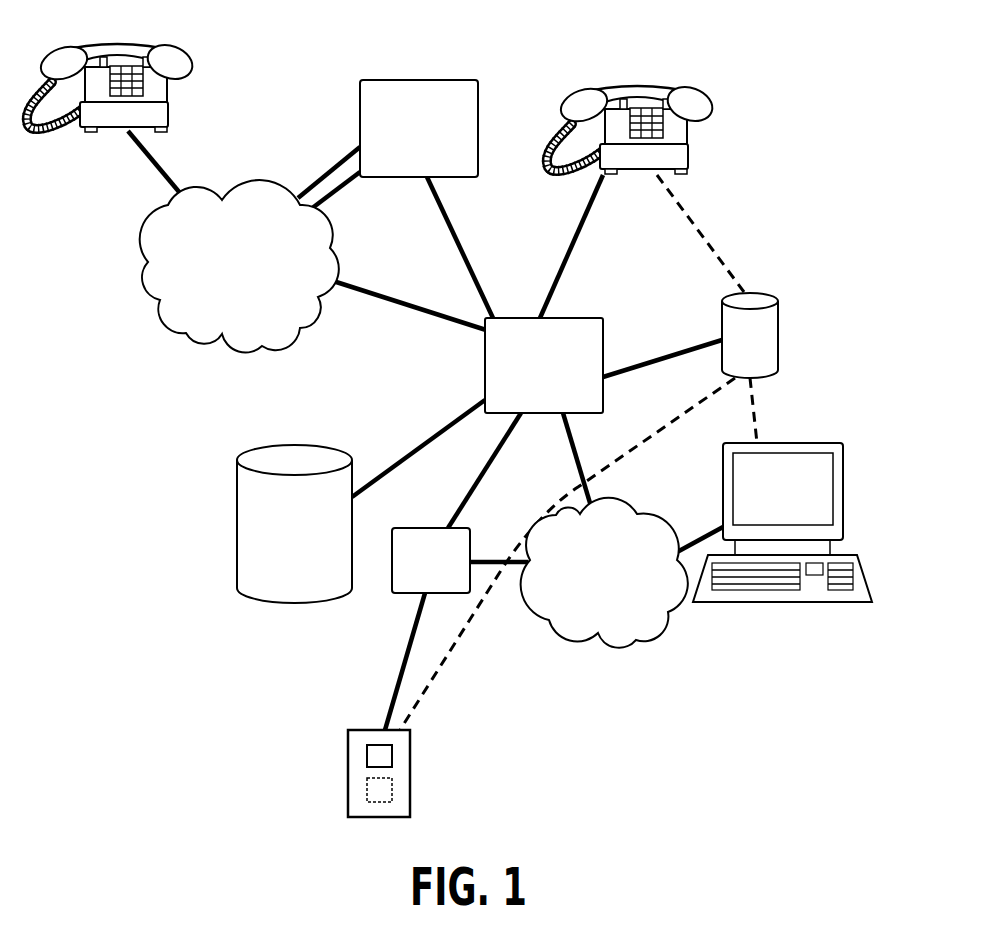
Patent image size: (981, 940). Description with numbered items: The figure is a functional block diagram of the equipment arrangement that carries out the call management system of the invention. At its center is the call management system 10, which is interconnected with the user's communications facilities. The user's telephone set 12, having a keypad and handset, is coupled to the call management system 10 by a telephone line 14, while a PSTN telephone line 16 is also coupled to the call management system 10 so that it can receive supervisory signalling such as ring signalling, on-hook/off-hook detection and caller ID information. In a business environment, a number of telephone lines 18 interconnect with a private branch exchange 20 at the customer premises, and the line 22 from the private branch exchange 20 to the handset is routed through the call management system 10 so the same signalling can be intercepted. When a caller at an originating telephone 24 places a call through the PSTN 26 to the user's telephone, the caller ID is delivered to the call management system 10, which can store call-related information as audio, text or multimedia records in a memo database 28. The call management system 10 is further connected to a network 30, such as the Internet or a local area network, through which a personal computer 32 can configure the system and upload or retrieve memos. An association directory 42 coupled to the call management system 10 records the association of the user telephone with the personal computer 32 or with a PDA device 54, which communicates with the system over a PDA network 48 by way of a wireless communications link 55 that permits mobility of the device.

The call management system 10 is at (606, 330).
The telephone set 12 is at (690, 158).
The telephone line 14 is at (566, 252).
The PSTN telephone line 16 is at (380, 302).
The telephone lines 18 is at (332, 170).
The private branch exchange 20 is at (410, 80).
The line 22 is at (457, 225).
The originating telephone 24 is at (170, 112).
The PSTN 26 is at (173, 307).
The memo database 28 is at (237, 507).
The network 30 is at (549, 622).
The personal computer 32 is at (845, 480).
The association directory 42 is at (779, 320).
The PDA network 48 is at (415, 528).
The PDA device 54 is at (410, 770).
The communications link 55 is at (399, 648).